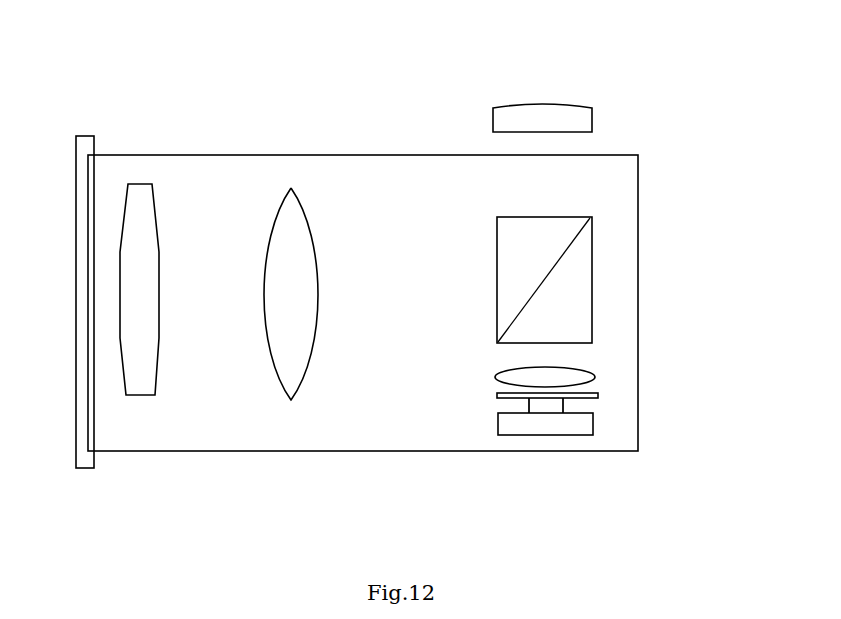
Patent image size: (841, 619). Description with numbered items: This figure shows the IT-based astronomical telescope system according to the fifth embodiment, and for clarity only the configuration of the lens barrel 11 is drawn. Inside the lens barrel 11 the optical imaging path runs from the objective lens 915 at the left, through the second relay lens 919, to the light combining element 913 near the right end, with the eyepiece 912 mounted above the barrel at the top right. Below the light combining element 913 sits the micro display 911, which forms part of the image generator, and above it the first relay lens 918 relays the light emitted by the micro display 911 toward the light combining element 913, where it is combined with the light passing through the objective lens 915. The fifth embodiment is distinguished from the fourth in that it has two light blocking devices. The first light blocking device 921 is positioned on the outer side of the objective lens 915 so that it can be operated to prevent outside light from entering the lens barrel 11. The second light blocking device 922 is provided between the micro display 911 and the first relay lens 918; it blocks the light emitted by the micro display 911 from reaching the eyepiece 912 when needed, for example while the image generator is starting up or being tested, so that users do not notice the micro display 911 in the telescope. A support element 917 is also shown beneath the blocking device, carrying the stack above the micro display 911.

The lens barrel 11 is at (615, 334).
The first light blocking device 921 is at (75, 328).
The objective lens 915 is at (142, 387).
The second relay lens 919 is at (293, 385).
The eyepiece 912 is at (543, 110).
The light combining element 913 is at (578, 256).
The first relay lens 918 is at (572, 371).
The second light blocking device 922 is at (567, 397).
The micro display 911 is at (530, 427).
The sensor mount 917 is at (523, 405).